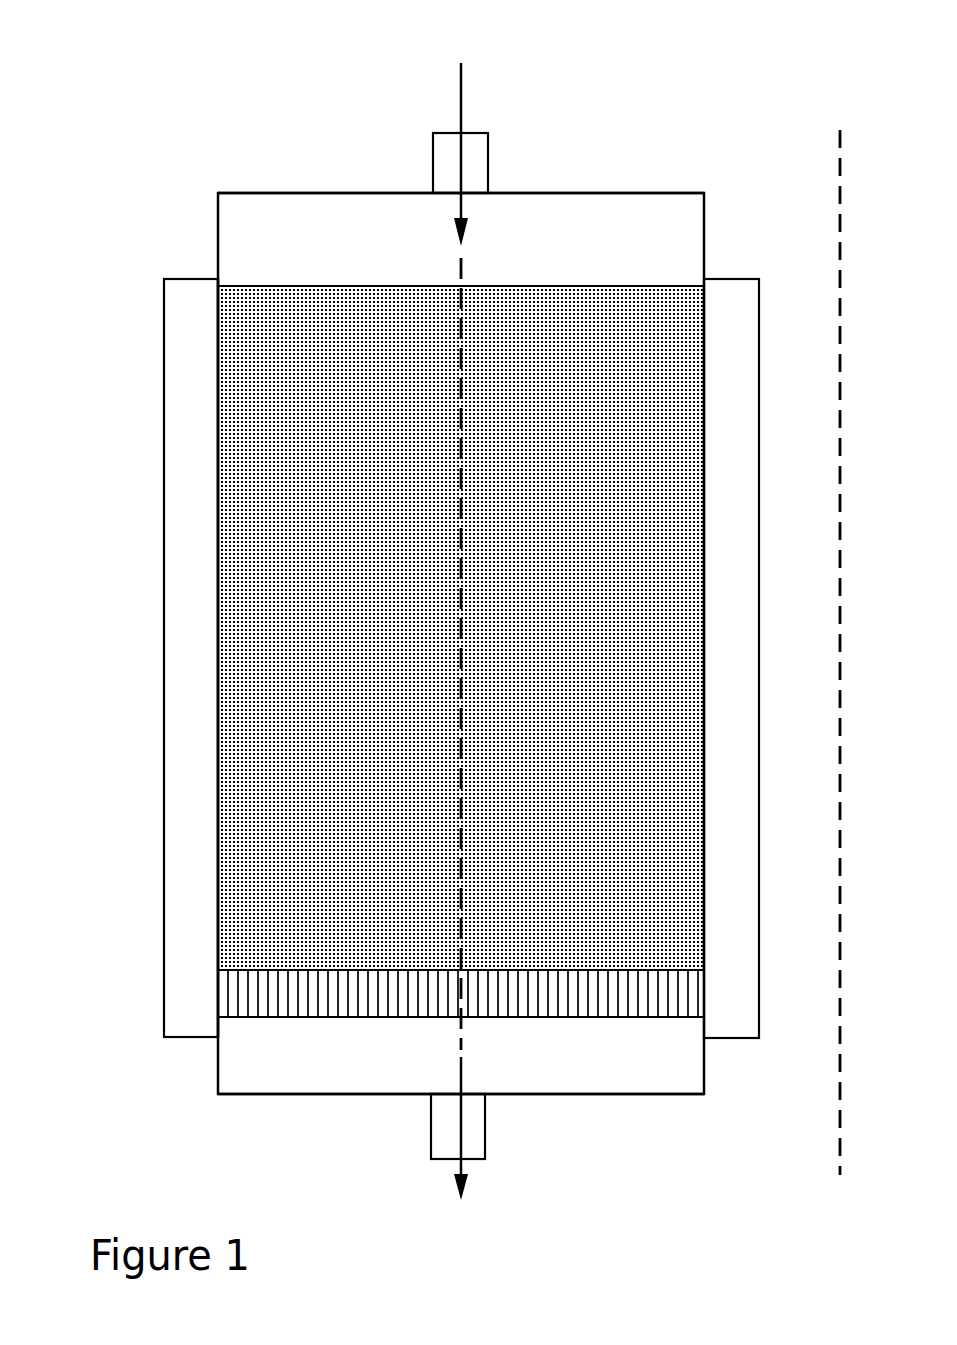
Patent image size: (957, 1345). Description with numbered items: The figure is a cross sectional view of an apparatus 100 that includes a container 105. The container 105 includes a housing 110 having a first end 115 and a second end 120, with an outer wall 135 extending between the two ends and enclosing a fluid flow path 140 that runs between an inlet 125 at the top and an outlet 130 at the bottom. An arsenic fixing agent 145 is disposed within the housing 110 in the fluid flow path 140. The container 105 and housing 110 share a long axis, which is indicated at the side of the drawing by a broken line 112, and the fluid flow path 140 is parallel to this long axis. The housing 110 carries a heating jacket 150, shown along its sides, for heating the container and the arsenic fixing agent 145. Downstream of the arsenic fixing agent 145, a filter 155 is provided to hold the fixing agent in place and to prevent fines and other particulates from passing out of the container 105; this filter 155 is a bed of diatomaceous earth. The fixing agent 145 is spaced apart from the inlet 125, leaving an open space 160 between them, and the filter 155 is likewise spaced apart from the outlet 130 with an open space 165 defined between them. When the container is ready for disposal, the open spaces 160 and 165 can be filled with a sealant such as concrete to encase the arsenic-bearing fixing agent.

The apparatus 100 is at (168, 127).
The container 105 is at (706, 230).
The housing 110 is at (204, 557).
The broken line 112 is at (842, 255).
The first end 115 is at (645, 192).
The second end 120 is at (640, 1096).
The inlet 125 is at (472, 123).
The outlet 130 is at (474, 1170).
The outer wall 135 is at (216, 414).
The fluid flow path 140 is at (466, 266).
The arsenic fixing agent 145 is at (354, 770).
The heating jacket 150 is at (176, 758).
The filter 155 is at (244, 993).
The open space 160 is at (350, 256).
The open space 165 is at (392, 1068).